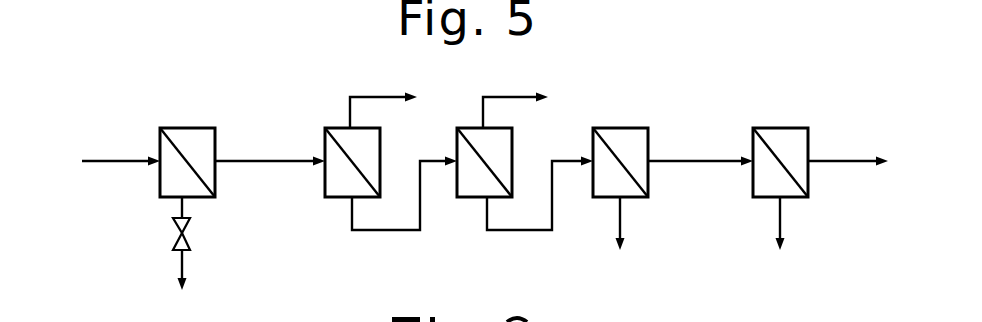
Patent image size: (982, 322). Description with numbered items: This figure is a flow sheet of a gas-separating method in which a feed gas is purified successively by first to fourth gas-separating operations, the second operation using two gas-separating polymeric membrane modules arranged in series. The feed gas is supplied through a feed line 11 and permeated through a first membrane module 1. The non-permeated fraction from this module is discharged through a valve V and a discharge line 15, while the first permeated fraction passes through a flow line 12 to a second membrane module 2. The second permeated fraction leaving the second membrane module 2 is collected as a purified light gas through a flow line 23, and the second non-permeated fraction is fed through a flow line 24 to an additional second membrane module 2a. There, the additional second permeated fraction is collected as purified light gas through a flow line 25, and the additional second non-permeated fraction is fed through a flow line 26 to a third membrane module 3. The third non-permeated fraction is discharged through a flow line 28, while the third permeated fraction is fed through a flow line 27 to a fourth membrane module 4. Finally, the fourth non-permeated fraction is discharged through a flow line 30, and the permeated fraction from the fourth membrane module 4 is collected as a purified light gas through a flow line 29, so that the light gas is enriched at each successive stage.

The first membrane module 1 is at (185, 128).
The feed line 11 is at (93, 161).
The flow line 12 is at (253, 161).
The valve V is at (187, 230).
The discharge line 15 is at (183, 270).
The second membrane module 2 is at (332, 127).
The flow line 23 is at (378, 96).
The flow line 24 is at (385, 231).
The additional second membrane module 2a is at (458, 197).
The flow line 25 is at (482, 108).
The flow line 26 is at (522, 231).
The third membrane module 3 is at (615, 127).
The flow line 27 is at (700, 160).
The flow line 28 is at (622, 222).
The fourth membrane module 4 is at (778, 127).
The flow line 29 is at (842, 160).
The flow line 30 is at (782, 222).